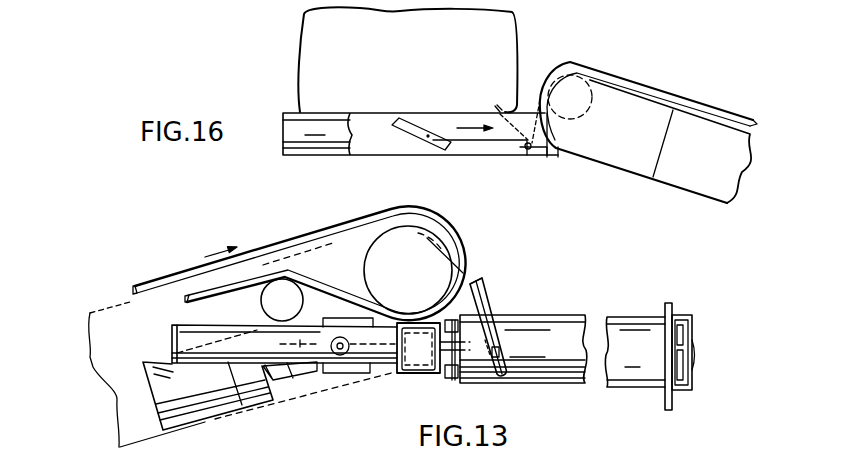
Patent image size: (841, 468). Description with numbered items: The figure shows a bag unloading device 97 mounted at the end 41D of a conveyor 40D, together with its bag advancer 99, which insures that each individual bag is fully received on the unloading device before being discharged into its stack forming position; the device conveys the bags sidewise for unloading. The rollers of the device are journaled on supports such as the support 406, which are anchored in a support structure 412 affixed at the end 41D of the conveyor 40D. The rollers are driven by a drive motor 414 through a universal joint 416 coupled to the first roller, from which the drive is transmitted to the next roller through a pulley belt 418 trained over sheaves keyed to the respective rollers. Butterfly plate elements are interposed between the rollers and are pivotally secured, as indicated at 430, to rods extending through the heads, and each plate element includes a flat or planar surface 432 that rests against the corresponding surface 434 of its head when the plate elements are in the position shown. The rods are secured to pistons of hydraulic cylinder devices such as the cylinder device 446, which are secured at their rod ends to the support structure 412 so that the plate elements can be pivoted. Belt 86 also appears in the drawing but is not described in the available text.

The conveyor 40D is at (113, 265).
The end of conveyor 41D is at (327, 262).
The belt roller 86 is at (356, 223).
The hydraulic cylinder device 446 is at (170, 333).
The drive motor 414 is at (122, 431).
The universal joint 416 is at (257, 420).
The support structure 412 is at (421, 372).
The pulley belt 418 is at (485, 394).
The pivotal securement 430 is at (503, 342).
The flat surface 432 is at (490, 288).
The head surface 434 is at (474, 343).
The bag advancer 99 is at (512, 295).
The roller support 406 is at (622, 392).
The bag unloading device 97 is at (695, 292).